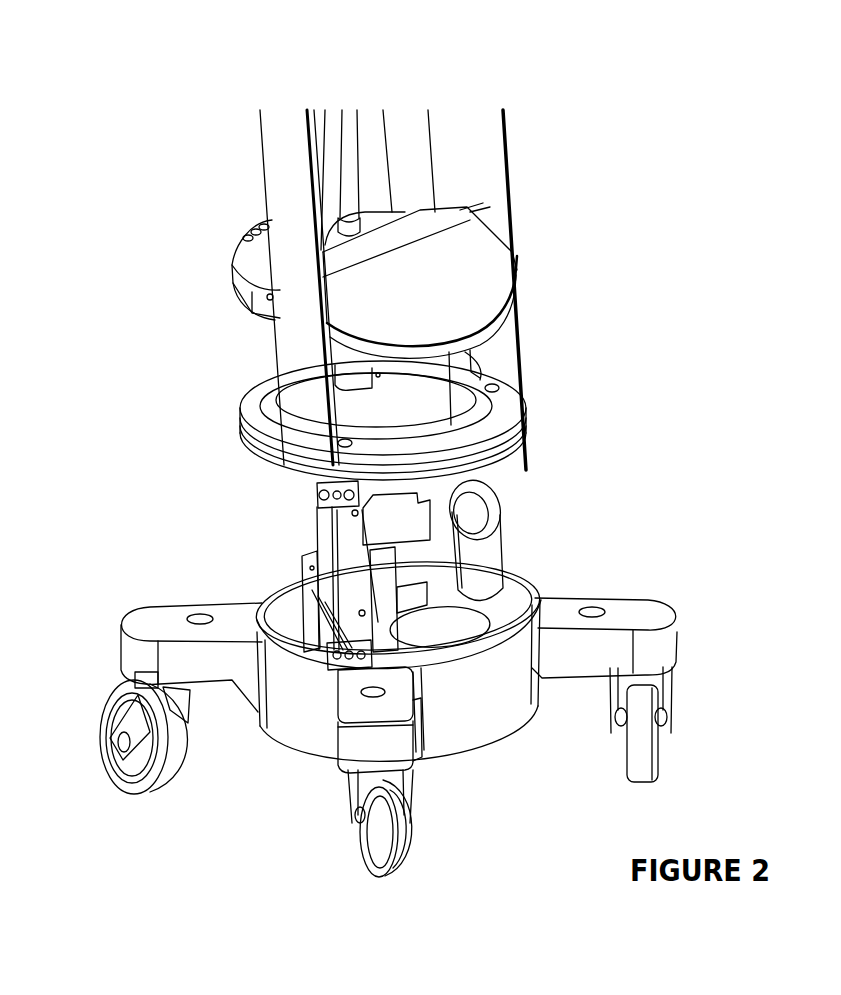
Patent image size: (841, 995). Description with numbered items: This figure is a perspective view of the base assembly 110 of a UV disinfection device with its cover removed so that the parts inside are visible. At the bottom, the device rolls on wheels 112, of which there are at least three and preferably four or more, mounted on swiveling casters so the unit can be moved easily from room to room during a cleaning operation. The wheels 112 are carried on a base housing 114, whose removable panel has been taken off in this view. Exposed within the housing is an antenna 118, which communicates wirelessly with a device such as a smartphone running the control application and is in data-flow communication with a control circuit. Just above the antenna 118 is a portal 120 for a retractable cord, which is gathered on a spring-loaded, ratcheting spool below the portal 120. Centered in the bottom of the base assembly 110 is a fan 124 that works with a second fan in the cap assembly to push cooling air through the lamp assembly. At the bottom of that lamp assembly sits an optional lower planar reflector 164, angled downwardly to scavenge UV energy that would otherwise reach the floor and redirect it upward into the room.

The base assembly 110 is at (463, 493).
The wheels 112 is at (178, 758).
The base housing 114 is at (503, 707).
The antenna 118 is at (482, 560).
The portal 120 is at (490, 506).
The fan 124 is at (450, 636).
The lower planar reflector 164 is at (480, 307).